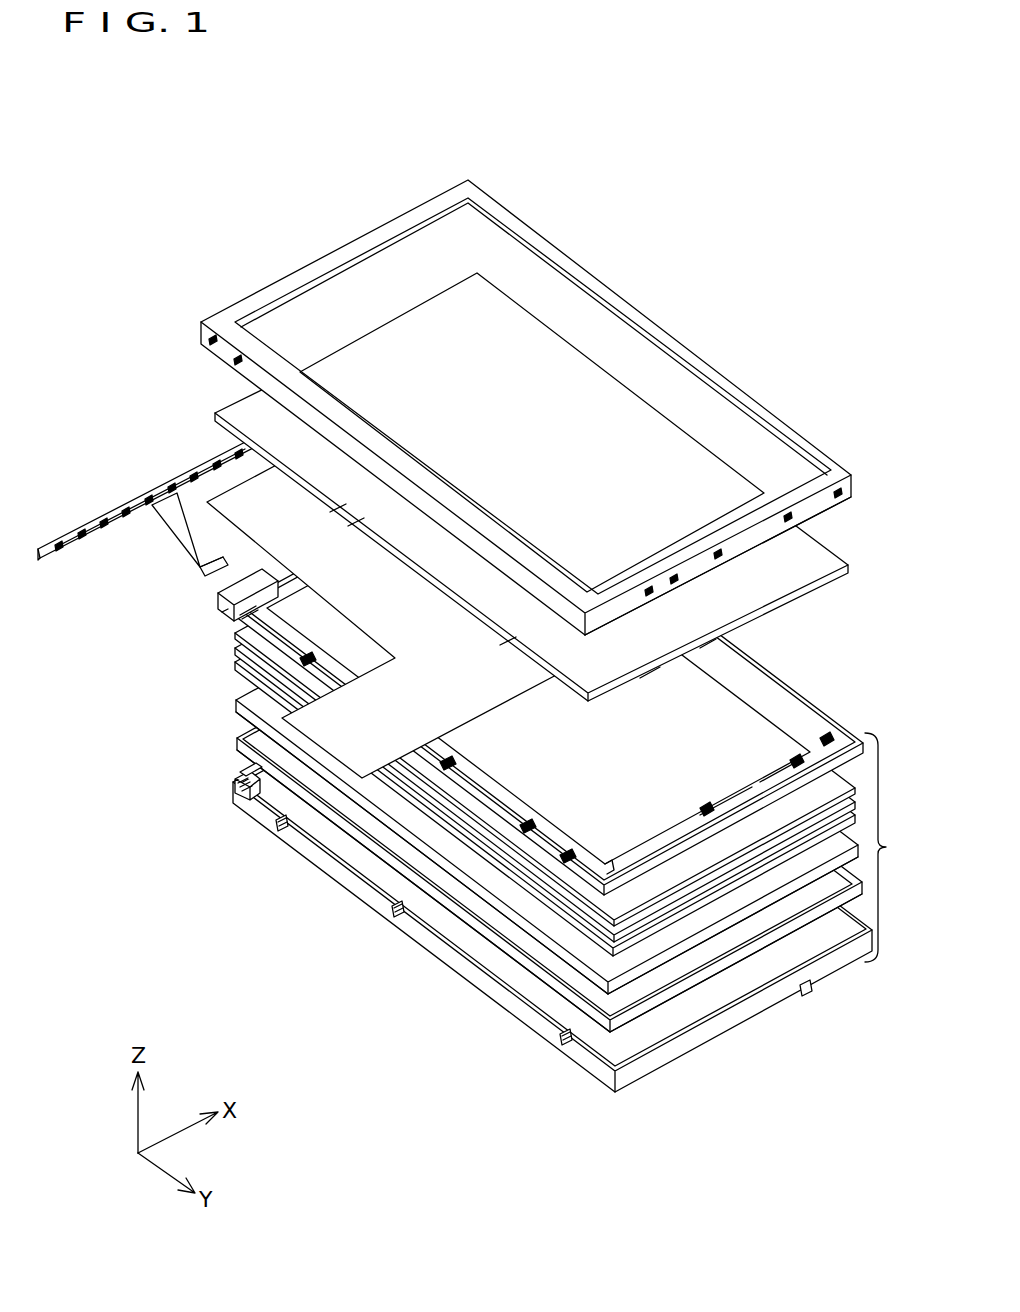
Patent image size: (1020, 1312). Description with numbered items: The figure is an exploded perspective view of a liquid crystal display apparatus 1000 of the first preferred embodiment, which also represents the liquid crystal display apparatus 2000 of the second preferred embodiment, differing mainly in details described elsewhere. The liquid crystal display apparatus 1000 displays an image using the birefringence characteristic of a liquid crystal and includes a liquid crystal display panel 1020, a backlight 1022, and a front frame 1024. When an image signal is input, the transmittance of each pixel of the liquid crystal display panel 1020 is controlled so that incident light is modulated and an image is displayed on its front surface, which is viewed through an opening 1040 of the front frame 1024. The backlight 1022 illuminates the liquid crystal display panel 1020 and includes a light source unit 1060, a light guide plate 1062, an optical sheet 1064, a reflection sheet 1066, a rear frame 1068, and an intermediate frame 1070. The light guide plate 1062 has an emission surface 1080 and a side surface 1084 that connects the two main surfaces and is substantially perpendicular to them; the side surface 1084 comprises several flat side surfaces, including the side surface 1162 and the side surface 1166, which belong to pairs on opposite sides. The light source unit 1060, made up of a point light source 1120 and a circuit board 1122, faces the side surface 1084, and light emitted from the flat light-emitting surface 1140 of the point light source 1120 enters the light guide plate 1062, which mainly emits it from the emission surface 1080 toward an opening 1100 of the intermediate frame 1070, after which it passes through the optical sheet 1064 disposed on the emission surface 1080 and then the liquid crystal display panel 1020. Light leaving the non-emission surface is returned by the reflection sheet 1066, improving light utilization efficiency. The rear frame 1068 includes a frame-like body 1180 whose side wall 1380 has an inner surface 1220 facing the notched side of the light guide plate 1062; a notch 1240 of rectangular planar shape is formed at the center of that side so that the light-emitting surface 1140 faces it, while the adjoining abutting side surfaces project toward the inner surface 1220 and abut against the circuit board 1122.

The liquid crystal display apparatus 1000 is at (754, 137).
The liquid crystal display apparatus 2000 is at (476, 638).
The liquid crystal display panel 1020 is at (830, 545).
The backlight 1022 is at (901, 847).
The front frame 1024 is at (836, 472).
The opening 1040 is at (327, 278).
The light source unit 1060 is at (175, 482).
The light guide plate 1062 is at (250, 690).
The optical sheet 1064 is at (222, 673).
The reflection sheet 1066 is at (243, 736).
The rear frame 1068 is at (255, 785).
The intermediate frame 1070 is at (215, 595).
The emission surface 1080 is at (413, 822).
The side surface 1084 is at (423, 852).
The opening 1100 is at (565, 836).
The point light source 1120 is at (102, 528).
The circuit board 1122 is at (50, 560).
The light-emitting surface 1140 is at (95, 538).
The side surface 1162 is at (745, 932).
The side surface 1166 is at (486, 905).
The frame-like body 1180 is at (552, 1035).
The inner surface 1220 is at (262, 793).
The notch 1240 is at (255, 672).
The side wall 1380 is at (250, 768).